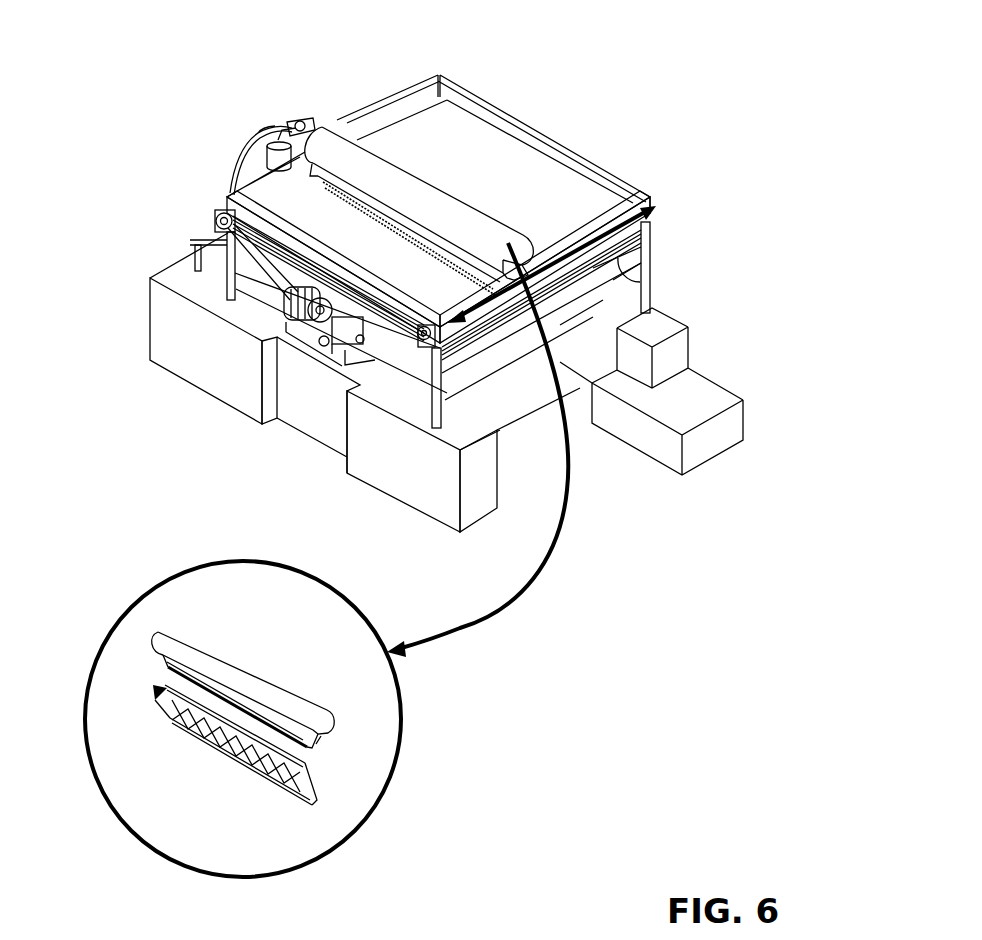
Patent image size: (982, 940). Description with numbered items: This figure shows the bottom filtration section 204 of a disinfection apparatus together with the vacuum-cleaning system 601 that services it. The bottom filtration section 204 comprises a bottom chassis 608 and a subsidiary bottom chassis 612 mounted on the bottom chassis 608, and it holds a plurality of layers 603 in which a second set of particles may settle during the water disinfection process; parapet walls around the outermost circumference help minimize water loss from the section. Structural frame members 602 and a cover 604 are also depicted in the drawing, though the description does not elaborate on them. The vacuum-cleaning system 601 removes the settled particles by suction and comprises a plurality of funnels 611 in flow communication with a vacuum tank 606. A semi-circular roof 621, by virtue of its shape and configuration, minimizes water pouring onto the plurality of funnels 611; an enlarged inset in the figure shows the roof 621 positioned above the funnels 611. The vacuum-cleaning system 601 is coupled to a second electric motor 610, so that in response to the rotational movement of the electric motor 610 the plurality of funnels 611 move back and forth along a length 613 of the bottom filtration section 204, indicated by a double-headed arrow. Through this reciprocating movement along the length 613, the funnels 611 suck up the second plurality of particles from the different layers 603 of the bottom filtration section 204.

The bottom filtration section 204 is at (758, 584).
The vacuum-cleaning system 601 is at (280, 88).
The frame members 602 is at (407, 90).
The plurality of layers 603 is at (396, 336).
The spray bar cover 604 is at (331, 128).
The vacuum tank 606 is at (262, 163).
The bottom chassis 608 is at (137, 278).
The second electric motor 610 is at (268, 303).
The plurality of funnels 611 is at (320, 802).
The subsidiary bottom chassis 612 is at (653, 235).
The length 613 is at (656, 218).
The semi-circular roof 621 is at (173, 624).